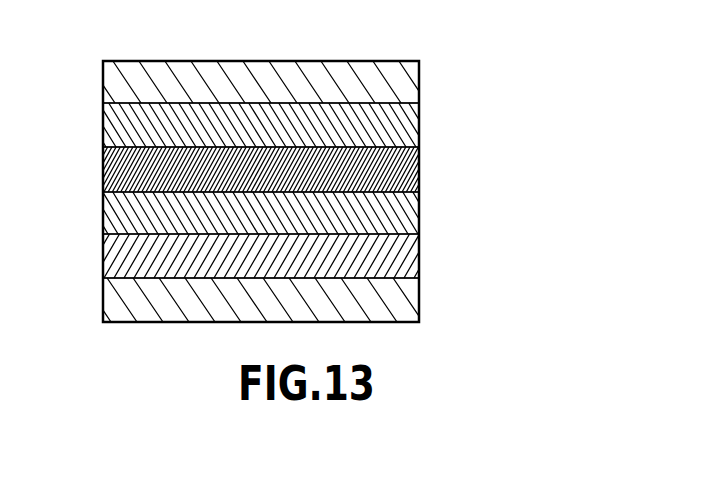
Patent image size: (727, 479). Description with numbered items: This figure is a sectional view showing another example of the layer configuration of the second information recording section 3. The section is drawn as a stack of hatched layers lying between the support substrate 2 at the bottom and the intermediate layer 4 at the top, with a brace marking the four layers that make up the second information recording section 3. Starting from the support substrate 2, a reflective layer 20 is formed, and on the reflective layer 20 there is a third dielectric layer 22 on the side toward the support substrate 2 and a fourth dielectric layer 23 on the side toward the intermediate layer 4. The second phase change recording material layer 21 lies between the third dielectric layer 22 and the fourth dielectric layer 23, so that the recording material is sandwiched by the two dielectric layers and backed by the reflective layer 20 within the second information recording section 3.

The support substrate 2 is at (408, 302).
The second information recording section 3 is at (310, 190).
The intermediate layer 4 is at (408, 85).
The reflective layer 20 is at (289, 256).
The second phase change recording material layer 21 is at (408, 165).
The third dielectric layer 22 is at (408, 215).
The fourth dielectric layer 23 is at (408, 128).